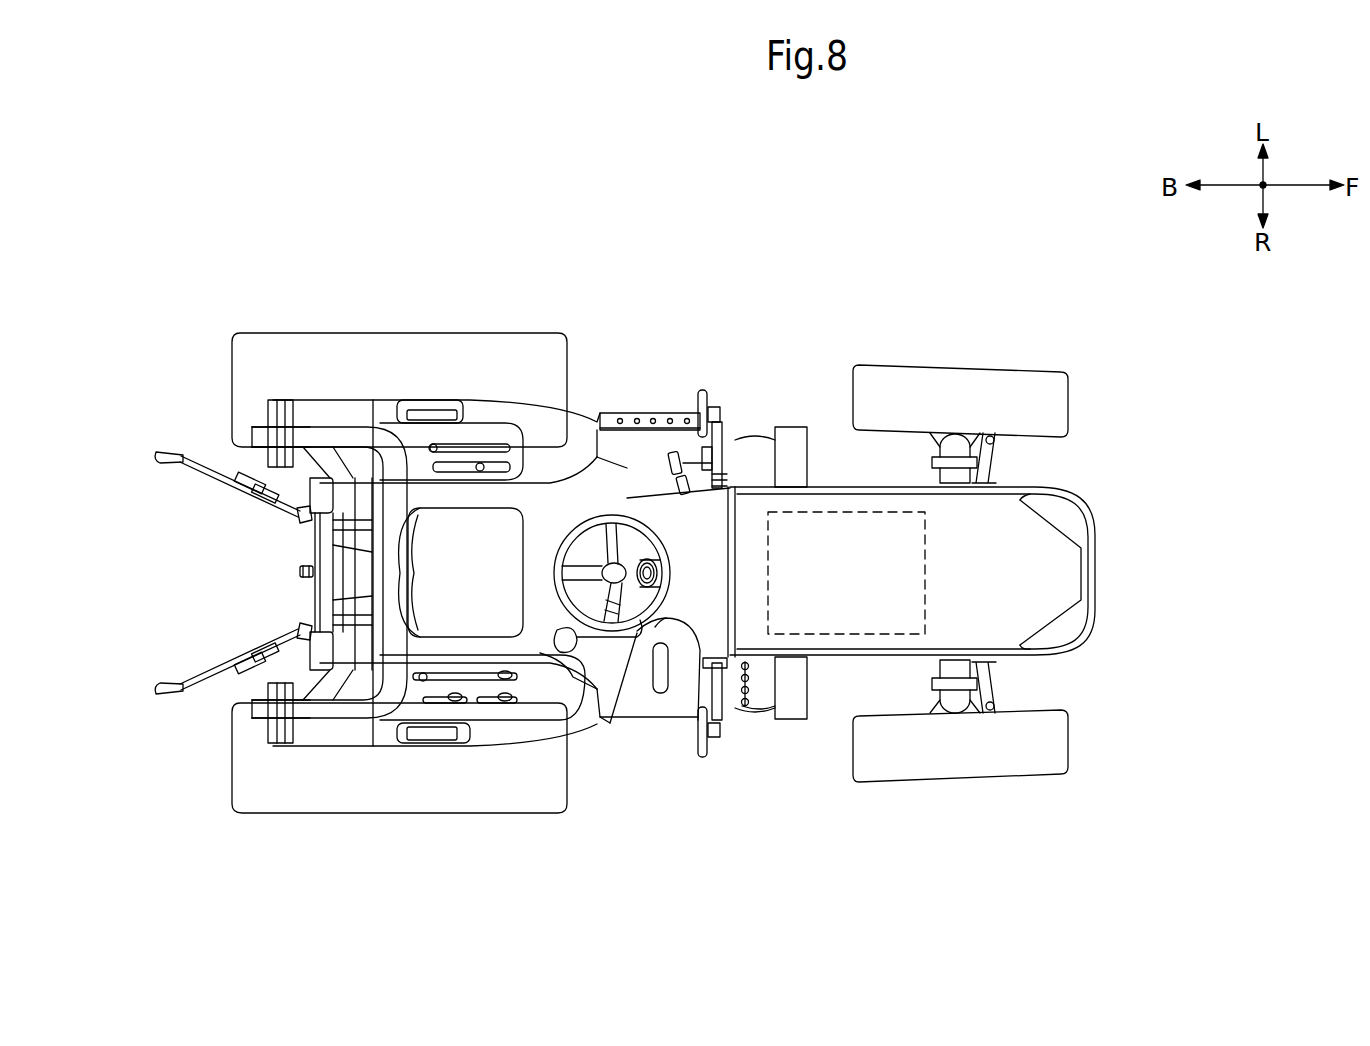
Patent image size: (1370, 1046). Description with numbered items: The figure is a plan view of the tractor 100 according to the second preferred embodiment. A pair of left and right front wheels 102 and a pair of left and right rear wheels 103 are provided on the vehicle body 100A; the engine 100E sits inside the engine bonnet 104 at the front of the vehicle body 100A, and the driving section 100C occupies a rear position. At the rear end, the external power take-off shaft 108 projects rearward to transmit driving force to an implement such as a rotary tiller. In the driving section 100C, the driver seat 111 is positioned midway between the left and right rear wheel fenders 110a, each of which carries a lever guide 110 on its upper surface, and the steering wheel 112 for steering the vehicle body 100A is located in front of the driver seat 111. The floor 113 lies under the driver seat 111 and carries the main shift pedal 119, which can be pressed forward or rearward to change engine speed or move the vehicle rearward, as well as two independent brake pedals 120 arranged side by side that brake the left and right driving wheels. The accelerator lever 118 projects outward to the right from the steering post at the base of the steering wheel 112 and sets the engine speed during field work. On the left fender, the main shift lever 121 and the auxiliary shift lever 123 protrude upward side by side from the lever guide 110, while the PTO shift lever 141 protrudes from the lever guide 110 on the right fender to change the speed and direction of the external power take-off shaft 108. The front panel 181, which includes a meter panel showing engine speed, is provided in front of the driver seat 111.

The tractor 100 is at (384, 222).
The vehicle body 100A is at (654, 396).
The driving section 100C is at (650, 697).
The engine 100E is at (850, 507).
The front wheels 102 is at (990, 383).
The rear wheels 103 is at (292, 347).
The engine bonnet 104 is at (1053, 577).
The external power take-off shaft 108 is at (300, 572).
The lever guide 110 is at (417, 400).
The rear wheel fenders 110a is at (537, 413).
The driver seat 111 is at (492, 575).
The steering wheel 112 is at (655, 543).
The floor 113 is at (630, 452).
The accelerator lever 118 is at (642, 600).
The main shift pedal 119 is at (637, 640).
The brake pedals 120 is at (673, 448).
The main shift lever 121 is at (488, 462).
The auxiliary shift lever 123 is at (433, 445).
The PTO shift lever 141 is at (505, 703).
The front panel 181 is at (660, 617).